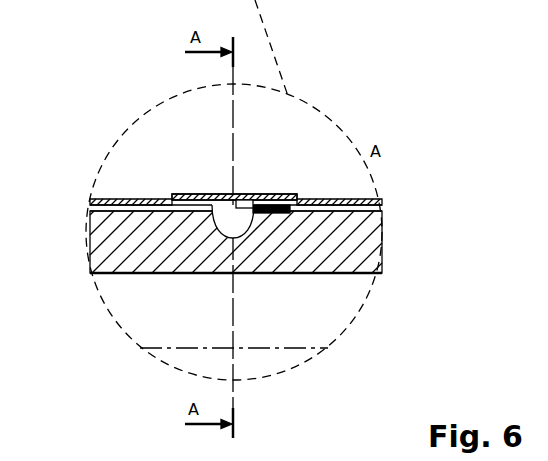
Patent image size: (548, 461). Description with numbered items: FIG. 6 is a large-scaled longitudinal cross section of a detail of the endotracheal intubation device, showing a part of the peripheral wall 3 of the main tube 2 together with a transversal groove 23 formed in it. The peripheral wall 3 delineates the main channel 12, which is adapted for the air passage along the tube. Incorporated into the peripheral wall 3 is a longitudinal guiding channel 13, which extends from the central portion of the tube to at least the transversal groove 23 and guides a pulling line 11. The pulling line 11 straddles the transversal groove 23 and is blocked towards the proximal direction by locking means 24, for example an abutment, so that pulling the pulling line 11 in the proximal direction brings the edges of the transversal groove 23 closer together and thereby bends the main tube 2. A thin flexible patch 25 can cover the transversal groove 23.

The main tube 2 is at (118, 178).
The peripheral wall 3 is at (112, 240).
The pulling line 11 is at (163, 197).
The main channel 12 is at (148, 312).
The guiding channel 13 is at (383, 209).
The transversal groove 23 is at (229, 224).
The locking means 24 is at (240, 196).
The thin flexible patch 25 is at (261, 192).